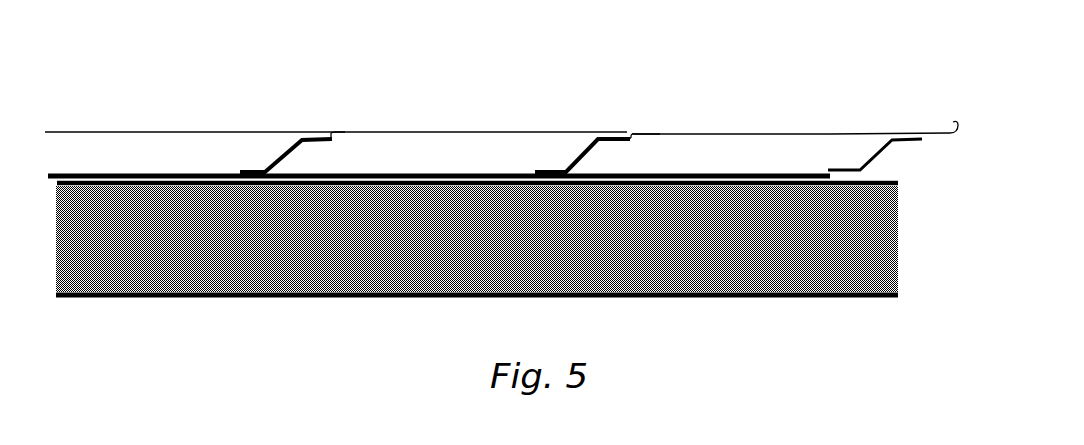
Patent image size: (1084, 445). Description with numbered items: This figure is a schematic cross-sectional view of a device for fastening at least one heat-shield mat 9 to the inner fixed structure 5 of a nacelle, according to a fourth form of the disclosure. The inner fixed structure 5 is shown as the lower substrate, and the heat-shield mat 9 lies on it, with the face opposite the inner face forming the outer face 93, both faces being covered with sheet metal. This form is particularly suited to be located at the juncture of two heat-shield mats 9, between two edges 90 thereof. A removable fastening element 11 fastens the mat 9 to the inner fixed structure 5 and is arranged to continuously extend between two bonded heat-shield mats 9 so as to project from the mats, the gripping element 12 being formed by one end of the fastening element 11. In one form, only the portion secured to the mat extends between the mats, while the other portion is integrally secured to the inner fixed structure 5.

The inner fixed structure 5 is at (735, 298).
The heat-shield mat 9 is at (155, 152).
The removable fastening element 11 is at (91, 166).
The gripping element 12 is at (347, 122).
The edge 90 is at (303, 160).
The outer face 93 is at (840, 132).